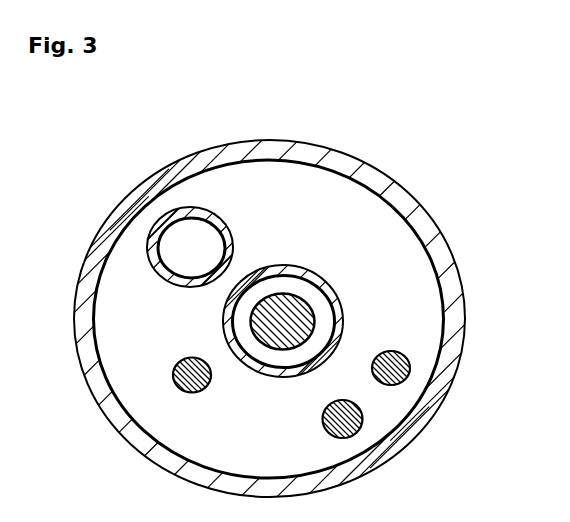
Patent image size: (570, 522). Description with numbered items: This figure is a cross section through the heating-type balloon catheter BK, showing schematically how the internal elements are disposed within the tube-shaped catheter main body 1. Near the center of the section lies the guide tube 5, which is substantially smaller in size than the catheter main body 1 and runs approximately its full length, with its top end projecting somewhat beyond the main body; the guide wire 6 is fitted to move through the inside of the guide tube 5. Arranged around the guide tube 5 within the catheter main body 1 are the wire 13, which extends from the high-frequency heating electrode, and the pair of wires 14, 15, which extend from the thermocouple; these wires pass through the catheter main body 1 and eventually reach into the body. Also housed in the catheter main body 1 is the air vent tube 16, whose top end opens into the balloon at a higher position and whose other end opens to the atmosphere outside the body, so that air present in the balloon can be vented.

The catheter main body 1 is at (450, 282).
The guide tube 5 is at (312, 273).
The guide wire 6 is at (292, 322).
The wire 13 is at (178, 383).
The wire 14 is at (358, 424).
The wire 15 is at (406, 377).
The air vent tube 16 is at (157, 263).
The catheter BK is at (440, 183).